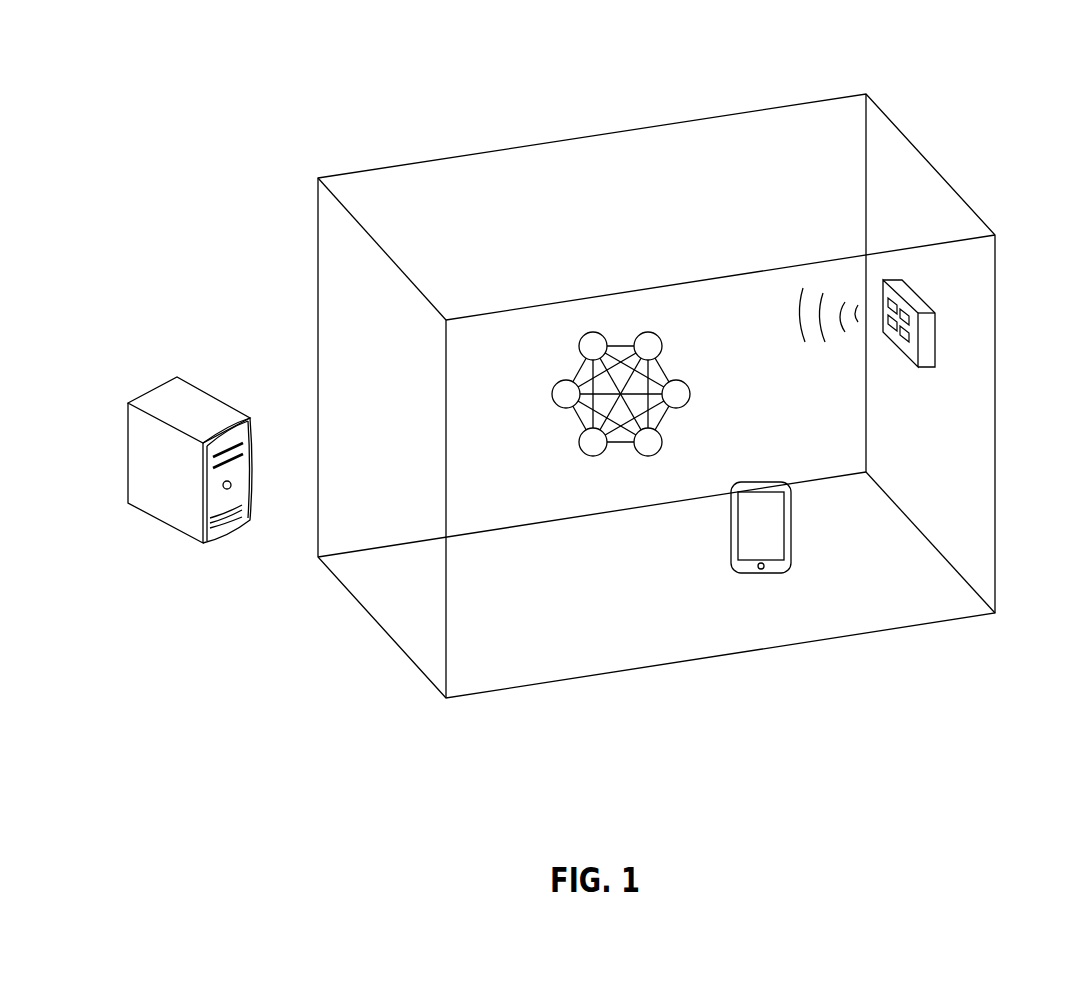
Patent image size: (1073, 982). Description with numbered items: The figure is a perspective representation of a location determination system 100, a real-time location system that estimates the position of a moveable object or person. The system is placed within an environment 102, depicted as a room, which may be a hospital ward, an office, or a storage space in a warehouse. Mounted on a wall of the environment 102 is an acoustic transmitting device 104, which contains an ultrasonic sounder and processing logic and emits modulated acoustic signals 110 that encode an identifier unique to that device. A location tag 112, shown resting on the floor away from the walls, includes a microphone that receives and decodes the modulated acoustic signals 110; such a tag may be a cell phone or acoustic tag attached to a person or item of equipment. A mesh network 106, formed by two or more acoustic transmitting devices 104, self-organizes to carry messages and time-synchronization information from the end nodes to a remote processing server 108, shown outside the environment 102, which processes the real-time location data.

The location determination system 100 is at (1043, 51).
The environment 102 is at (497, 151).
The acoustic transmitting device 104 is at (926, 351).
The mesh network 106 is at (551, 396).
The remote processing server 108 is at (199, 390).
The modulated acoustic signals 110 is at (825, 345).
The location tag 112 is at (792, 505).